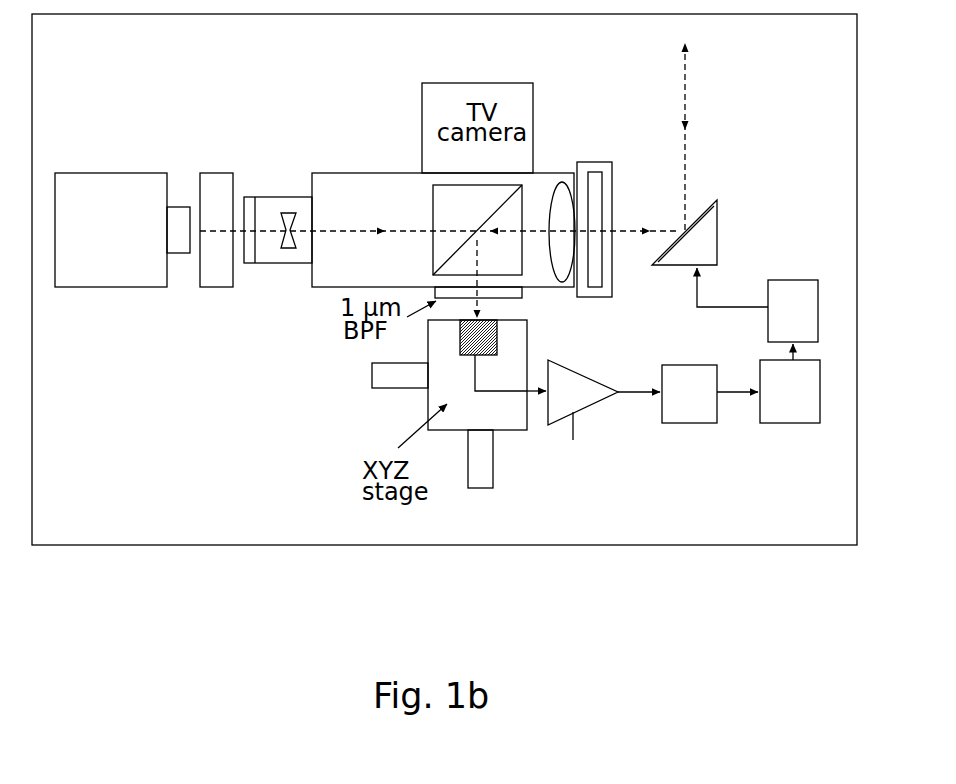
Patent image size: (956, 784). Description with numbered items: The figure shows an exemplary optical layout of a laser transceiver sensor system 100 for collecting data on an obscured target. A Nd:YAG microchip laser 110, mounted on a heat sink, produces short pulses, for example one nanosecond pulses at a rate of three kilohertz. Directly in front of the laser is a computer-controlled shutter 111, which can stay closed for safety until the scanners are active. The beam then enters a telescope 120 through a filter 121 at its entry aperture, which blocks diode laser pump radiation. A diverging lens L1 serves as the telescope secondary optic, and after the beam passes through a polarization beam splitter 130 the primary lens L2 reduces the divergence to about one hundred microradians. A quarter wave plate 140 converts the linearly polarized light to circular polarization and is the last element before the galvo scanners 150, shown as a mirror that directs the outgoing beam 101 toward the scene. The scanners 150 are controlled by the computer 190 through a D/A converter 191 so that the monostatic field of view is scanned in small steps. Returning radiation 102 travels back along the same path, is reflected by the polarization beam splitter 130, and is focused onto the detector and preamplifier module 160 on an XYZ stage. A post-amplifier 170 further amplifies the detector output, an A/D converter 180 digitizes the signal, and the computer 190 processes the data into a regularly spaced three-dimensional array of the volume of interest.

The laser transceiver sensor system 100 is at (240, 67).
The outgoing light beam 101 is at (692, 43).
The returning radiation 102 is at (688, 128).
The Nd:YAG microchip laser 110 is at (175, 222).
The computer-controlled shutter 111 is at (208, 275).
The telescope 120 is at (305, 187).
The filter 121 is at (247, 193).
The polarization beam splitter 130 is at (430, 197).
The quarter wave plate 140 is at (600, 261).
The galvo scanners 150 is at (706, 242).
The preamplifier module 160 is at (456, 338).
The post-amplifier 170 is at (593, 410).
The A/D converter 180 is at (710, 394).
The computer 190 is at (803, 400).
The D/A converter 191 is at (757, 305).
The diverging lens L1 is at (289, 254).
The primary lens L2 is at (563, 200).